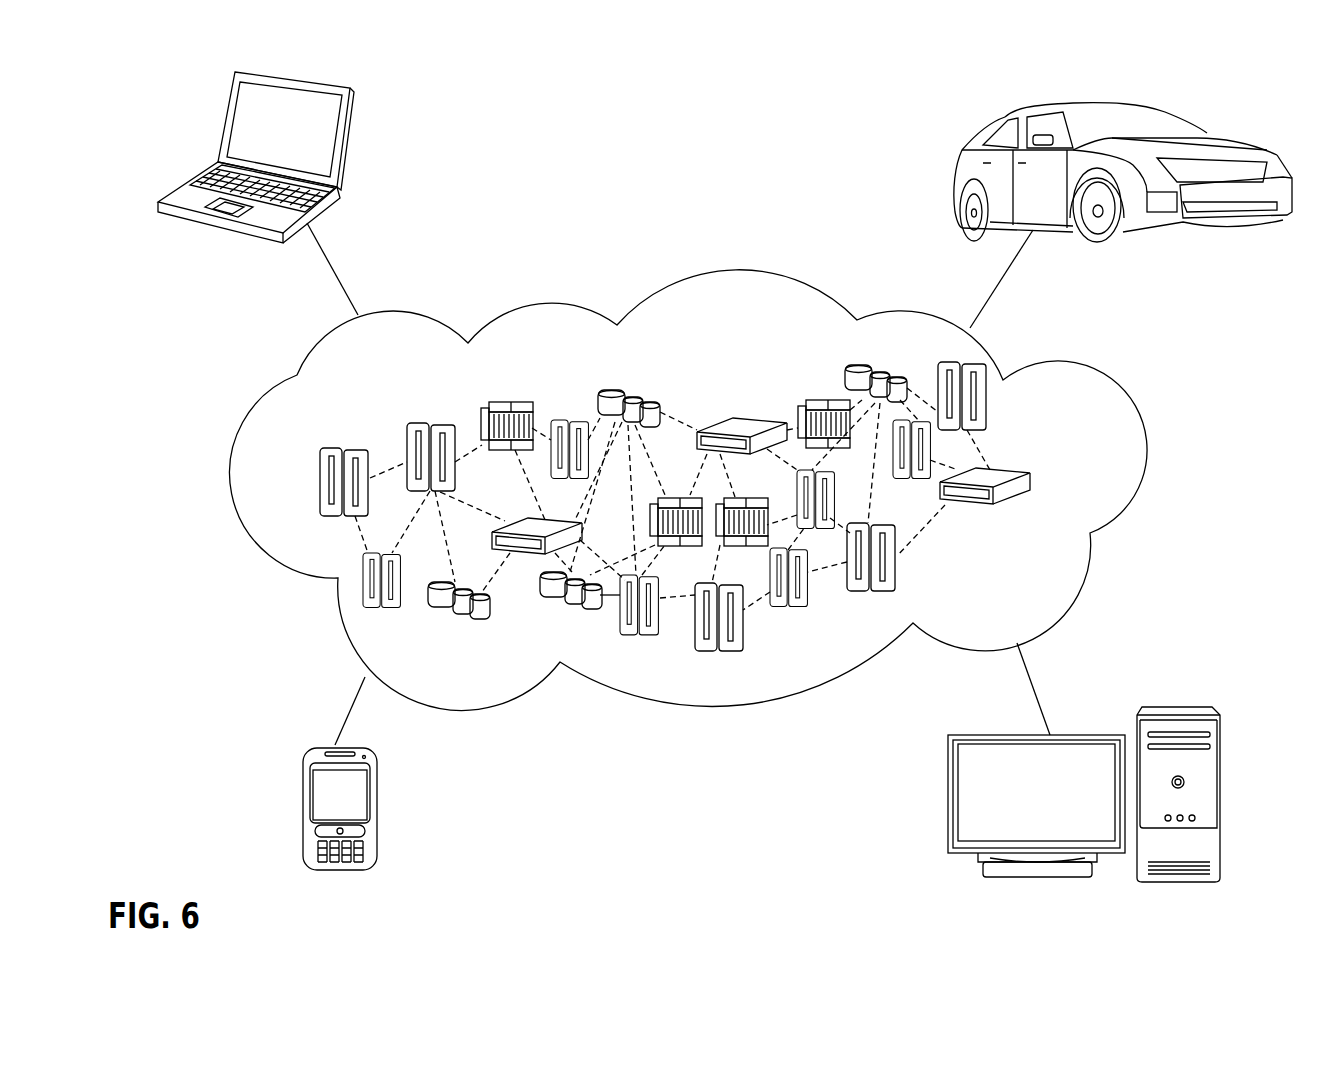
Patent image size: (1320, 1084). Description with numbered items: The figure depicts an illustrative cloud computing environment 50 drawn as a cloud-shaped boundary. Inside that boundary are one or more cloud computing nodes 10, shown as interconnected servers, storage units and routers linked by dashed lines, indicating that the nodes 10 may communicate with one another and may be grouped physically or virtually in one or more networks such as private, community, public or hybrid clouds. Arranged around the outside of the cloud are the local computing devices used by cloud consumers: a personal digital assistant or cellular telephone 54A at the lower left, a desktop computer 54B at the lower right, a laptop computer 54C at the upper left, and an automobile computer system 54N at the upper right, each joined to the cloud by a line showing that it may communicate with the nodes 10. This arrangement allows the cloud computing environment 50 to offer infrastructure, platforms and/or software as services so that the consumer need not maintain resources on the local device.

The cloud computing nodes 10 is at (1074, 482).
The cloud computing environment 50 is at (1093, 392).
The personal digital assistant (PDA) or cellular telephone 54A is at (303, 811).
The desktop computer 54B is at (1180, 705).
The laptop computer 54C is at (345, 147).
The automobile computer system 54N is at (958, 148).